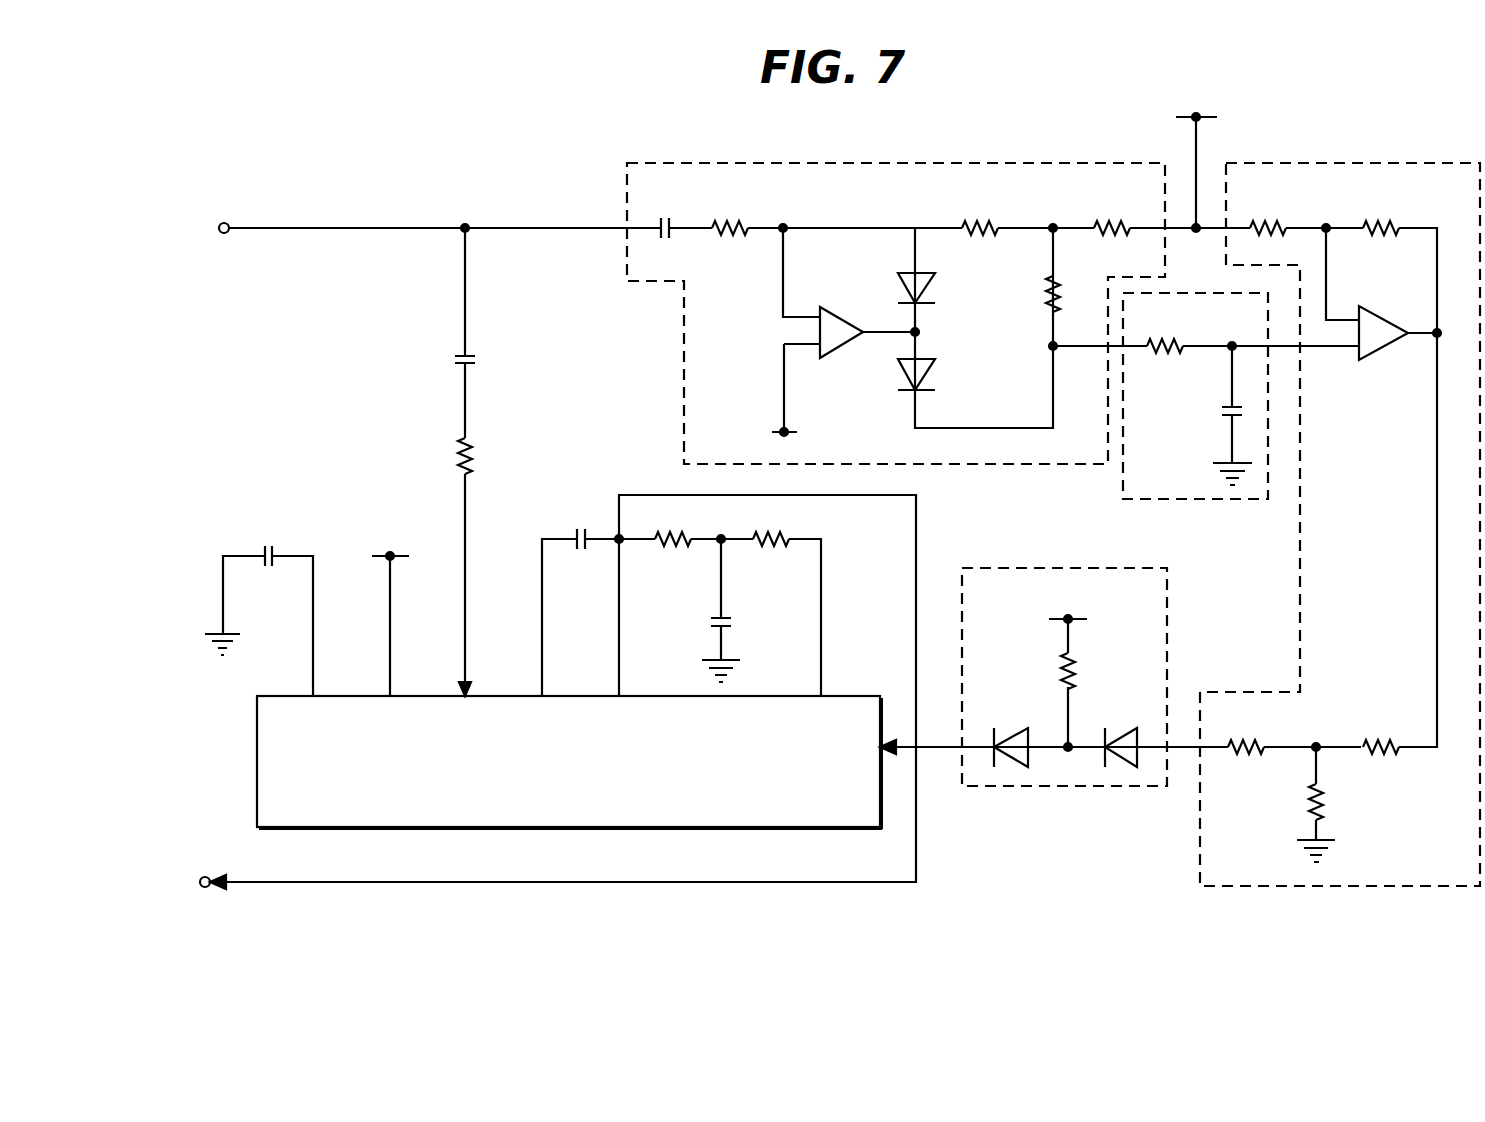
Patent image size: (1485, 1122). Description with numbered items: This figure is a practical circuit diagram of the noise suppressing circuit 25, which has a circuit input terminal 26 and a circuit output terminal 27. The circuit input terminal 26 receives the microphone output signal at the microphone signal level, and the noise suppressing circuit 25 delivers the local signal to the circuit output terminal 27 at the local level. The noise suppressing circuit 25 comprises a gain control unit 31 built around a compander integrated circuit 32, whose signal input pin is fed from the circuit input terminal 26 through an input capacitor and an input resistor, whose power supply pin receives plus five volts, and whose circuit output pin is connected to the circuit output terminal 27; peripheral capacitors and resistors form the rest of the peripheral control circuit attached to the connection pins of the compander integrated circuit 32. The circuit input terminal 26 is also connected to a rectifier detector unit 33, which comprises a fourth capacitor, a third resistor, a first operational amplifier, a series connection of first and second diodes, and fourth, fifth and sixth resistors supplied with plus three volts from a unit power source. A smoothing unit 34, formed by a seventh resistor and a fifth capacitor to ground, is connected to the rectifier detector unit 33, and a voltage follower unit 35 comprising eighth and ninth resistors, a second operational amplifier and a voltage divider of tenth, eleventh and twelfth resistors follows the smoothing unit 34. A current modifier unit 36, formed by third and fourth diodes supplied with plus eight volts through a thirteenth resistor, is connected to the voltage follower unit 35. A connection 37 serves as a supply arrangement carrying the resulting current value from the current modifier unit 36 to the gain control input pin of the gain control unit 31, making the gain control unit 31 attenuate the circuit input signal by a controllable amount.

The noise suppressing circuit 25 is at (492, 190).
The circuit input terminal 26 is at (222, 222).
The circuit output terminal 27 is at (203, 876).
The gain control unit 31 is at (340, 486).
The compander integrated circuit 32 is at (755, 829).
The rectifier detector unit 33 is at (636, 281).
The smoothing unit 34 is at (1189, 502).
The voltage follower unit 35 is at (1298, 637).
The current modifier unit 36 is at (1055, 788).
The connection 37 is at (948, 750).